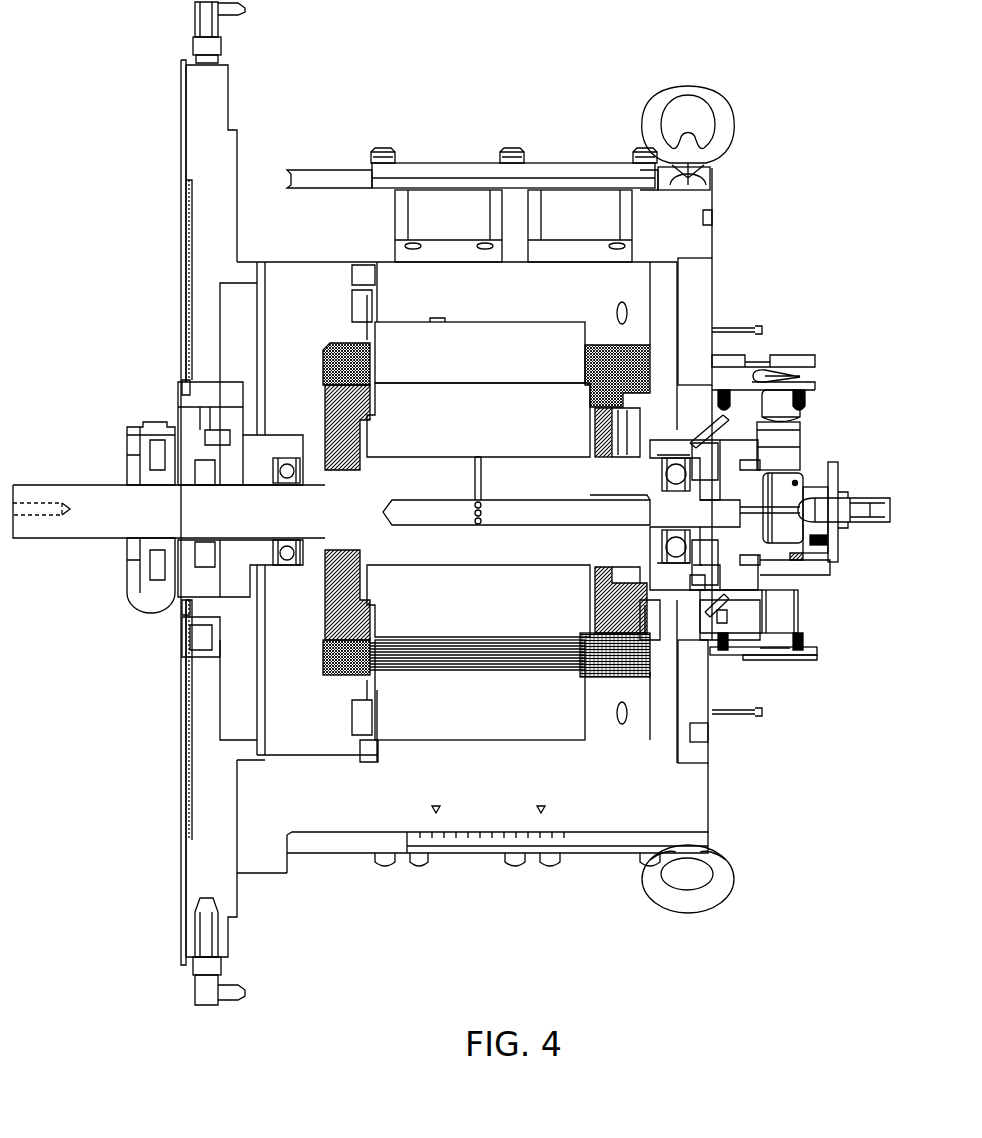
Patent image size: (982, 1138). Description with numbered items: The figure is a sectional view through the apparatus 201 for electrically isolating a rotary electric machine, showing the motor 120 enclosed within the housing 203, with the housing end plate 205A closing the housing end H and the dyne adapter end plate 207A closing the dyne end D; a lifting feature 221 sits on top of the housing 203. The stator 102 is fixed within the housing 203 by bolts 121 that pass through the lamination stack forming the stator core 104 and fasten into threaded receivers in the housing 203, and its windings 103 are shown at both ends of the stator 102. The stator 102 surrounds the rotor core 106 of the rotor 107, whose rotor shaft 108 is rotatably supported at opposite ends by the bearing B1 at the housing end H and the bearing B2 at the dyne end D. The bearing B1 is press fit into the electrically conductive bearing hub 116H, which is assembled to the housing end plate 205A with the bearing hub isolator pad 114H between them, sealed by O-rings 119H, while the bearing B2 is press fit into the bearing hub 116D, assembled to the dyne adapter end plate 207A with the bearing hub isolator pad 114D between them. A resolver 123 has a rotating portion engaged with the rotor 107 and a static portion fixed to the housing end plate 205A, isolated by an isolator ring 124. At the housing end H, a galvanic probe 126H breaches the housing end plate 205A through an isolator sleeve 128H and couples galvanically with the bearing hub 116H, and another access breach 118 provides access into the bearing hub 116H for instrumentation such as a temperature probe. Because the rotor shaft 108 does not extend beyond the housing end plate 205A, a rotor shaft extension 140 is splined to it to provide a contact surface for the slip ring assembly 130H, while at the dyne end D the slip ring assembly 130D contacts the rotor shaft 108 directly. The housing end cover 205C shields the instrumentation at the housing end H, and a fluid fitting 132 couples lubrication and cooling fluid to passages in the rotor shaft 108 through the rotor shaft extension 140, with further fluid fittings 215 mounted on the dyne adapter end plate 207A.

The apparatus 201 is at (462, 96).
The housing 203 is at (313, 178).
The lifting ring 221 is at (733, 128).
The fluid fittings 215 is at (222, 15).
The dyne adapter end plate 207A is at (203, 167).
The dyne end D is at (98, 212).
The housing end H is at (875, 360).
The motor 120 is at (705, 228).
The housing end plate 205A is at (697, 279).
The stator 102 is at (333, 316).
The stator windings 103 is at (650, 362).
The stator core 104 is at (494, 359).
The rotor core 106 is at (494, 426).
The rotor shaft 108 is at (352, 515).
The rotor 107 is at (300, 508).
The bearing hub 116D is at (237, 420).
The bearing B2 is at (273, 458).
The bearing hub isolator pad 114D is at (222, 447).
The slip ring assembly 130D is at (125, 588).
The bolts 121 is at (222, 730).
The isolator ring 124 is at (770, 365).
The housing end cover 205C is at (795, 378).
The galvanic probe 126H is at (745, 420).
The slip ring assembly 130H is at (805, 437).
The isolator sleeve 128H is at (745, 452).
The bearing hub isolator pad 114H is at (808, 467).
The fluid fitting 132 is at (848, 526).
The rotor shaft extension 140 is at (803, 551).
The bearing B1 is at (707, 557).
The bearing hub 116H is at (740, 565).
The O-rings 119H is at (700, 582).
The access breach 118 is at (723, 595).
The resolver 123 is at (647, 608).